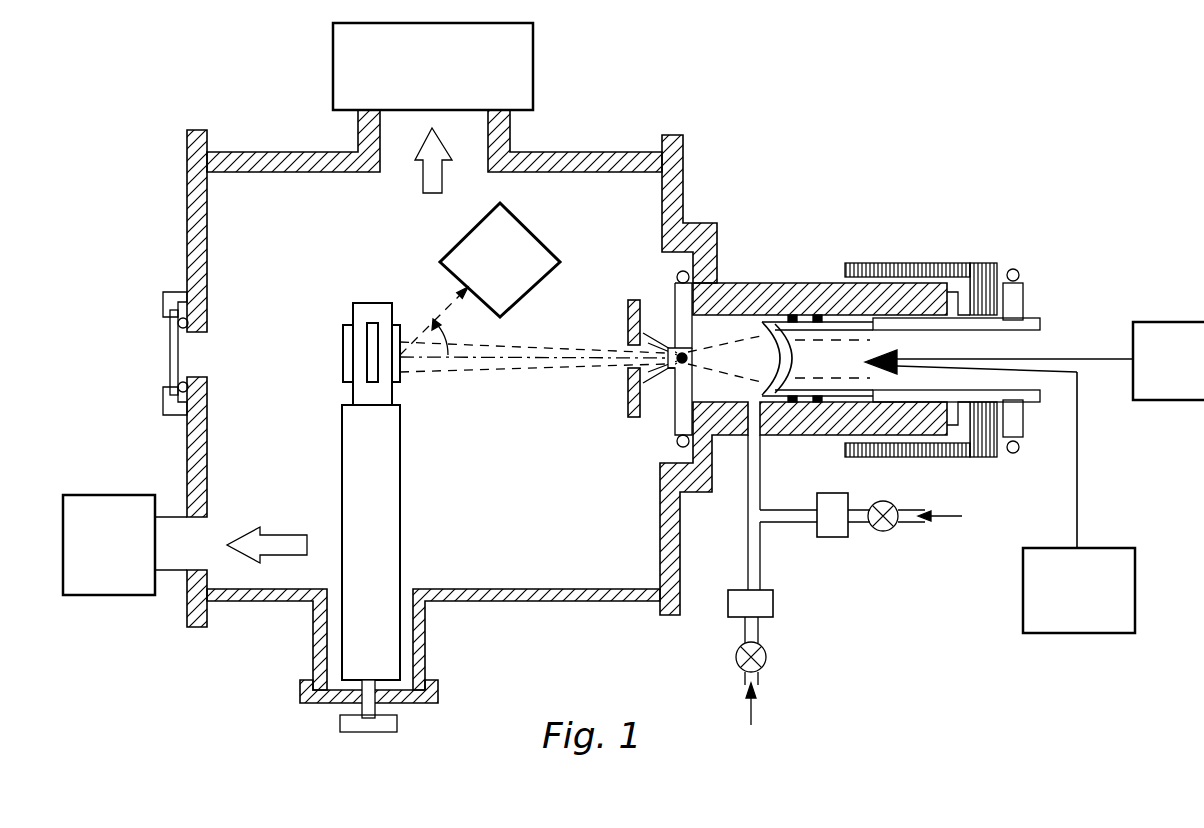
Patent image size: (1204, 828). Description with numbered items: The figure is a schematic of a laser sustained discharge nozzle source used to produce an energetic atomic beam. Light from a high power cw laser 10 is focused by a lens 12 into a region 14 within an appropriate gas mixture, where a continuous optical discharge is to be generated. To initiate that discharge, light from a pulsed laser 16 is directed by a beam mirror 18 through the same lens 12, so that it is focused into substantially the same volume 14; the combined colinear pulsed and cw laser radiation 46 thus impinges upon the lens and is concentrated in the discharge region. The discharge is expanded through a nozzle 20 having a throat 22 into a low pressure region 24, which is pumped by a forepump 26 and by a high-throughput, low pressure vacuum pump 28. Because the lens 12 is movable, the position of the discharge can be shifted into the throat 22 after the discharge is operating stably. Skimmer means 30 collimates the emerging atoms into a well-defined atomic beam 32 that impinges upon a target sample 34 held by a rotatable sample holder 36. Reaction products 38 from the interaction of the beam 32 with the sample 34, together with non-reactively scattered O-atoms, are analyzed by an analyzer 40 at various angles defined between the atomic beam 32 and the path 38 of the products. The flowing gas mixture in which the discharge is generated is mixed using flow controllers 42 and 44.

The high power cw laser 10 is at (1185, 371).
The lens 12 is at (767, 366).
The region 14 is at (690, 352).
The pulsed laser 16 is at (1094, 603).
The beam mirror 18 is at (1082, 368).
The nozzle 20 is at (673, 412).
The throat 22 is at (668, 322).
The low pressure region 24 is at (585, 487).
The forepump 26 is at (122, 556).
The high-throughput, low pressure vacuum pump 28 is at (447, 80).
The skimmer means 30 is at (620, 397).
The atomic beam 32 is at (562, 372).
The target sample 34 is at (400, 378).
The rotatable sample holder 36 is at (400, 530).
The reaction products 38 is at (452, 302).
The analyzer 40 is at (513, 273).
The flow controller 42 is at (845, 537).
The flow controller 44 is at (775, 604).
The laser radiation 46 is at (901, 360).